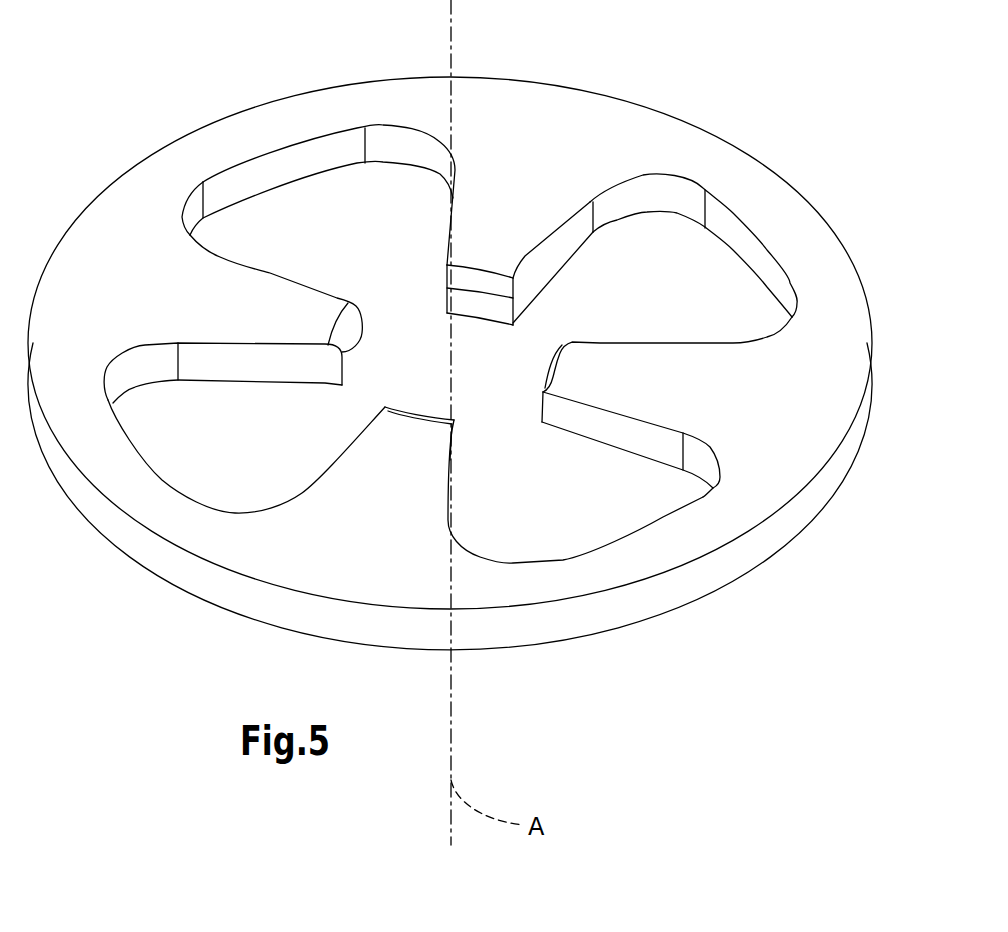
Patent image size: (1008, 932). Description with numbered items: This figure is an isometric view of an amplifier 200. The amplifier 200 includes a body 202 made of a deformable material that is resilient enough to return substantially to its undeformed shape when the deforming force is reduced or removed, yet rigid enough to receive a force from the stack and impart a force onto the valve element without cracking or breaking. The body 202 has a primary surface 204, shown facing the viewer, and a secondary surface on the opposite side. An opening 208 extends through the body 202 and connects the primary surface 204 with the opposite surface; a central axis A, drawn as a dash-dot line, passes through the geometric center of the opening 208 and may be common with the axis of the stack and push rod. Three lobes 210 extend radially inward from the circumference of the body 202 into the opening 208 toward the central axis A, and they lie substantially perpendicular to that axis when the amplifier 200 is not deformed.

The amplifier 200 is at (765, 99).
The body 202 is at (803, 503).
The primary surface 204 is at (537, 135).
The opening 208 is at (485, 387).
The lobes 210 is at (395, 473).